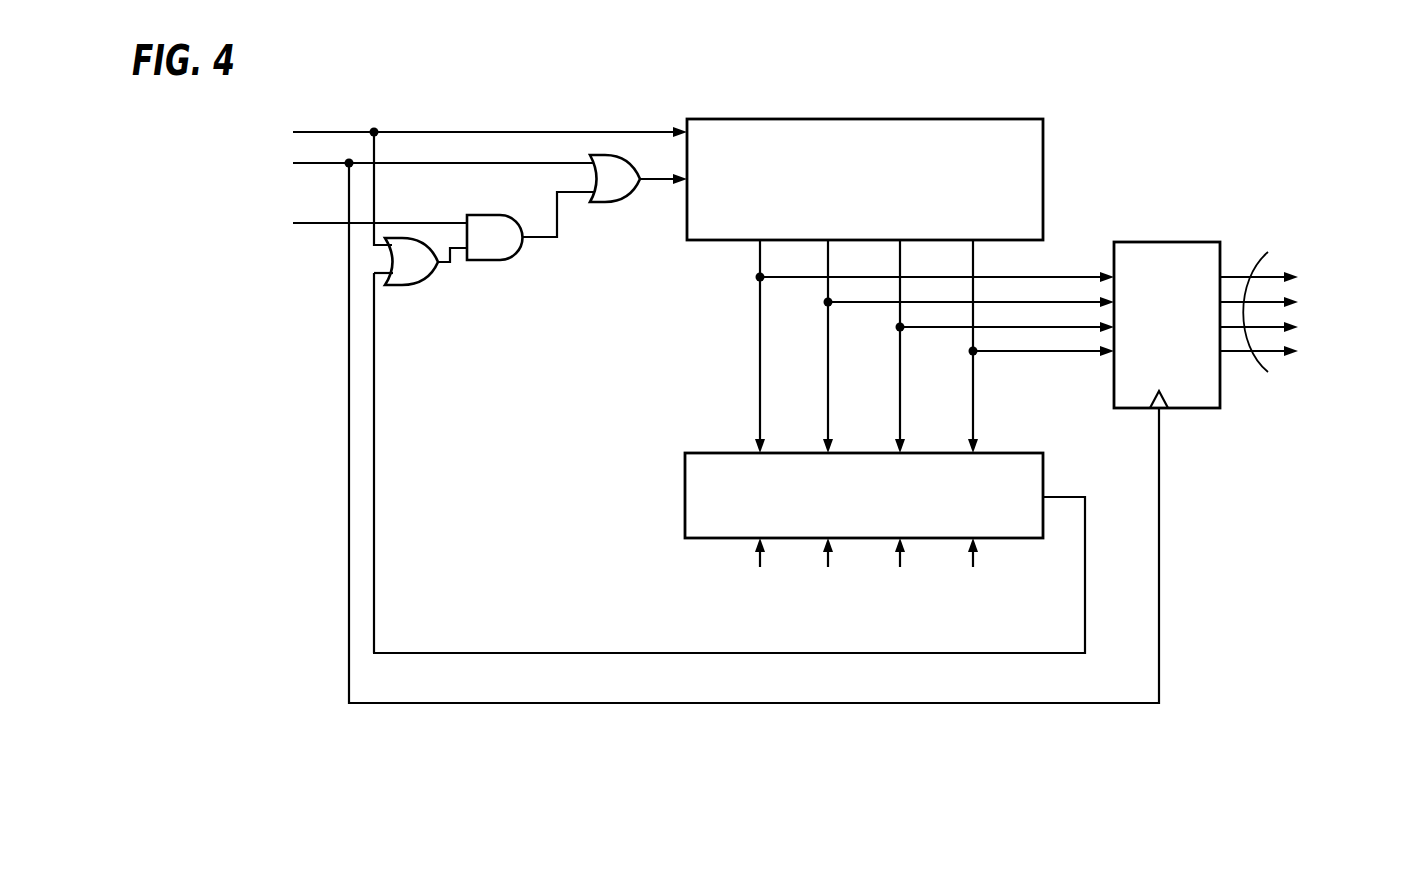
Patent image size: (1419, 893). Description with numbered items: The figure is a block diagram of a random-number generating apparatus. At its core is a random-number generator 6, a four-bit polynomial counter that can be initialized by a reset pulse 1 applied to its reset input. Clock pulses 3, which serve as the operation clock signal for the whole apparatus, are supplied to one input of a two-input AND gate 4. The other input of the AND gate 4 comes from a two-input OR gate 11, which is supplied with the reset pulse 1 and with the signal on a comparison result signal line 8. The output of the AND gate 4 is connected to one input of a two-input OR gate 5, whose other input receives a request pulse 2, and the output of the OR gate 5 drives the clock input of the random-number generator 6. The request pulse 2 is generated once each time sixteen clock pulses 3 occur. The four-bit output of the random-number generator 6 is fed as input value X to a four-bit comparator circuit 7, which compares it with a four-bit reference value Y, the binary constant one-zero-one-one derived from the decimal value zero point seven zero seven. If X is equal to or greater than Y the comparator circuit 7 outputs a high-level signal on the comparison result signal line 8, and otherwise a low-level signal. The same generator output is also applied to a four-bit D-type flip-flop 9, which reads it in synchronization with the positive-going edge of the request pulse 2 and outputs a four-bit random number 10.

The reset pulse 1 is at (388, 180).
The request pulse 2 is at (605, 425).
The clock pulses 3 is at (276, 223).
The AND gate 4 is at (487, 262).
The OR gate 5 is at (625, 204).
The random-number generator 6 is at (1000, 119).
The comparator circuit 7 is at (685, 497).
The comparison result signal line 8 is at (564, 653).
The D-type flip-flop 9 is at (1153, 241).
The random number 10 is at (1266, 252).
The OR gate 11 is at (410, 286).